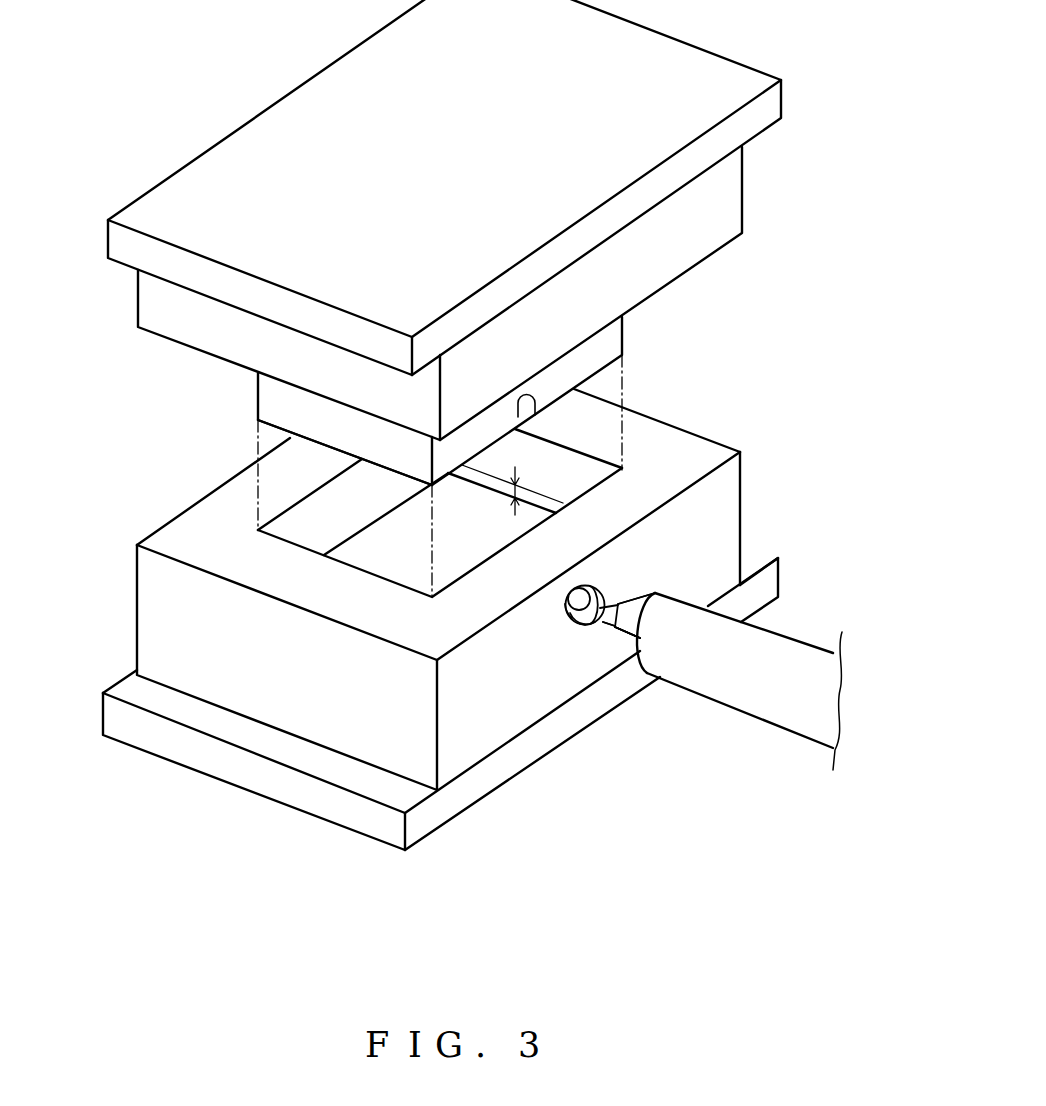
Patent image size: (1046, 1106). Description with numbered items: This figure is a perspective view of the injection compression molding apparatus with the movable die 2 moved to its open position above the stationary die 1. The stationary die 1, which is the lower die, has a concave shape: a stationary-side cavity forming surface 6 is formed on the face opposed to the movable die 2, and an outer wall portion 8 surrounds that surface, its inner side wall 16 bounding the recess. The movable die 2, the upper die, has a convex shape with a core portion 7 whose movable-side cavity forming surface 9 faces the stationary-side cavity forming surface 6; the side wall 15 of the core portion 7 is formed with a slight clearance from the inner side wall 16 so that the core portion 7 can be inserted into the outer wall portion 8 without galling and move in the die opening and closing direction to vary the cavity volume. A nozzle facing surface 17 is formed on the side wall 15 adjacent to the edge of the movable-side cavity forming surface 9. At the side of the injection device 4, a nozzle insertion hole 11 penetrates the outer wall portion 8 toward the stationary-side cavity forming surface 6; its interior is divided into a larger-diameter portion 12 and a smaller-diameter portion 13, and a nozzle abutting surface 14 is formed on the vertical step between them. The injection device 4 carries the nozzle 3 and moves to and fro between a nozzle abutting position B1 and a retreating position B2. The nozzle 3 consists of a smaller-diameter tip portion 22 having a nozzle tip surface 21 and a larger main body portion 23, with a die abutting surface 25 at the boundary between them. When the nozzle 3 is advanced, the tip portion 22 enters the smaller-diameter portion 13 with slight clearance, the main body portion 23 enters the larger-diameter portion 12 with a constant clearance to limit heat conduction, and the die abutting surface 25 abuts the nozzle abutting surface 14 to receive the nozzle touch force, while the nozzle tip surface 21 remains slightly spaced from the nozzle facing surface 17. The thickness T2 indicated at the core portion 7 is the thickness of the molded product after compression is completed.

The stationary die 1 is at (152, 783).
The movable die 2 is at (153, 157).
The nozzle 3 is at (637, 670).
The injection device 4 is at (788, 715).
The stationary-side cavity forming surface 6 is at (388, 552).
The core portion 7 is at (235, 415).
The outer wall portion 8 is at (265, 479).
The movable-side cavity forming surface 9 is at (277, 424).
The nozzle insertion hole 11 is at (555, 647).
The larger-diameter portion 12 is at (606, 628).
The smaller-diameter portion 13 is at (576, 628).
The nozzle abutting surface 14 is at (588, 627).
The side wall 15 is at (293, 400).
The inner side wall 16 is at (303, 528).
The nozzle facing surface 17 is at (528, 417).
The nozzle tip surface 21 is at (590, 588).
The tip portion 22 is at (618, 604).
The main body portion 23 is at (645, 600).
The die abutting surface 25 is at (619, 634).
The nozzle abutting position B1 is at (622, 640).
The retreating position B2 is at (640, 612).
The thickness of the molded product T2 is at (513, 490).